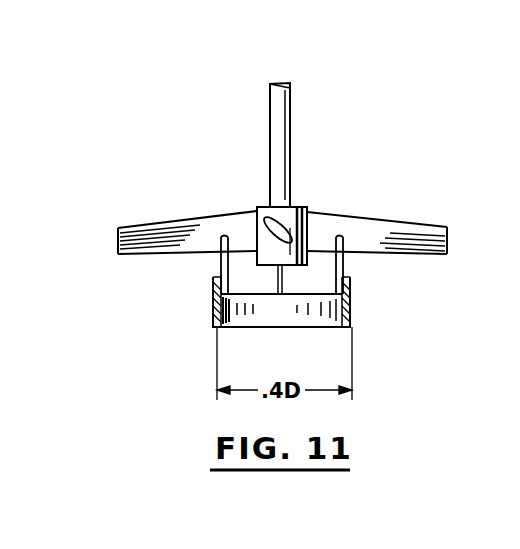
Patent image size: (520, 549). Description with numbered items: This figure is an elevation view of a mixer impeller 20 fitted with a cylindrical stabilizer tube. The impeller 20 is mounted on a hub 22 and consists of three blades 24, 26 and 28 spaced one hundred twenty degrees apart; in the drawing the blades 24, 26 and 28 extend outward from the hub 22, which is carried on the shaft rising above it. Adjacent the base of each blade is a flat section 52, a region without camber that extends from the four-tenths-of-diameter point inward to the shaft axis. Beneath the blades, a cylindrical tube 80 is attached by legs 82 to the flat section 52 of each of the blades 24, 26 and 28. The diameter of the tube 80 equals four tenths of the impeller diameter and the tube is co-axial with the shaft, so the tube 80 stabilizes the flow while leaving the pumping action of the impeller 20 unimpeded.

The mixing impeller 20 is at (234, 170).
The hub 22 is at (300, 206).
The blade 24 is at (412, 232).
The blade 26 is at (309, 215).
The blade 28 is at (146, 226).
The flat section 52 is at (211, 224).
The cylindrical tube 80 is at (317, 317).
The legs 82 is at (220, 266).